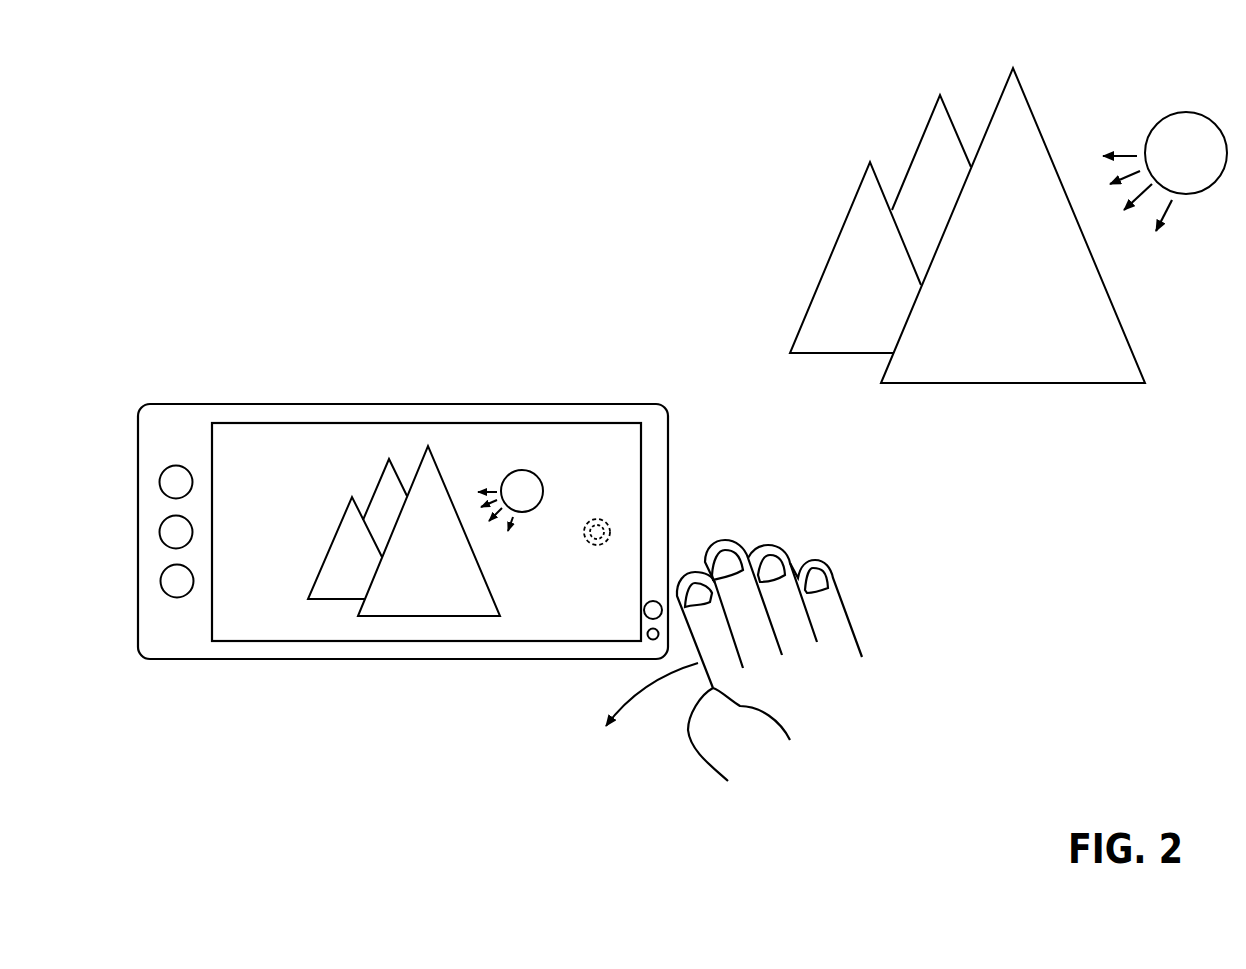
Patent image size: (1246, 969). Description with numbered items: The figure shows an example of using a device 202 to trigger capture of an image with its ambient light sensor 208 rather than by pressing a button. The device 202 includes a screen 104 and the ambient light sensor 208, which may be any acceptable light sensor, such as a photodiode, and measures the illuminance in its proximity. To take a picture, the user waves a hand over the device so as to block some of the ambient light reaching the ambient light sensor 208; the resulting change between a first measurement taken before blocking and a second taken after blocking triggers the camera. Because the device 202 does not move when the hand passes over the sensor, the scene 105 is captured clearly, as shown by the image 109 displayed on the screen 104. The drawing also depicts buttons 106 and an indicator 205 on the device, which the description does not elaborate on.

The scene 105 is at (826, 161).
The image 109 is at (361, 452).
The screen 104 is at (641, 432).
The device 202 is at (668, 468).
The touch target indicator 205 is at (607, 525).
The buttons 106 is at (161, 588).
The ambient light sensor 208 is at (649, 640).